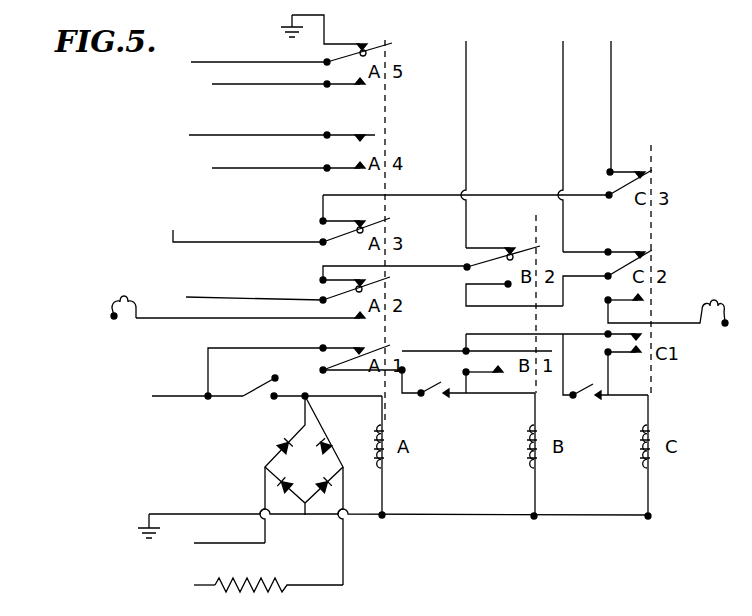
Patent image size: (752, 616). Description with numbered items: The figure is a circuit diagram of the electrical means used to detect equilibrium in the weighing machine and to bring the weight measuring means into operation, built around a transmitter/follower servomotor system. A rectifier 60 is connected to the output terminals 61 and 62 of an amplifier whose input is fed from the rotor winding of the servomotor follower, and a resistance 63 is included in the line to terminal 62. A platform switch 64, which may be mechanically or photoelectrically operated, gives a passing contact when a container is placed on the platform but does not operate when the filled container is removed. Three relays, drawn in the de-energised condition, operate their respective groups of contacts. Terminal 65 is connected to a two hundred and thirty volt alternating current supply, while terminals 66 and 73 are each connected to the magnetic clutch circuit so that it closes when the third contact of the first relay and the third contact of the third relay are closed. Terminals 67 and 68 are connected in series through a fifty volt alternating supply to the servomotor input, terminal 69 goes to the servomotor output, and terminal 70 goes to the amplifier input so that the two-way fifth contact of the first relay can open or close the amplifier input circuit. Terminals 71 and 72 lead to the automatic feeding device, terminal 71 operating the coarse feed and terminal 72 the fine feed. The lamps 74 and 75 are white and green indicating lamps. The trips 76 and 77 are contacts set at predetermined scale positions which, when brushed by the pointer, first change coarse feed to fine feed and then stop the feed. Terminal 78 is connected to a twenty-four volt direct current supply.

The rectifier 60 is at (304, 455).
The amplifier output terminal 61 is at (216, 542).
The amplifier output terminal 62 is at (191, 585).
The resistance 63 is at (279, 596).
The platform switch 64 is at (312, 398).
The terminal 65 is at (241, 295).
The terminal 66 is at (241, 223).
The terminal 67 is at (275, 166).
The terminal 68 is at (269, 134).
The terminal 69 is at (275, 83).
The terminal 70 is at (246, 62).
The terminal 71 is at (467, 131).
The terminal 72 is at (564, 133).
The terminal 73 is at (619, 93).
The white indicating lamp 74 is at (238, 319).
The green indicating lamp 75 is at (668, 324).
The trip 76 is at (476, 402).
The trip 77 is at (609, 403).
The terminal 78 is at (224, 378).